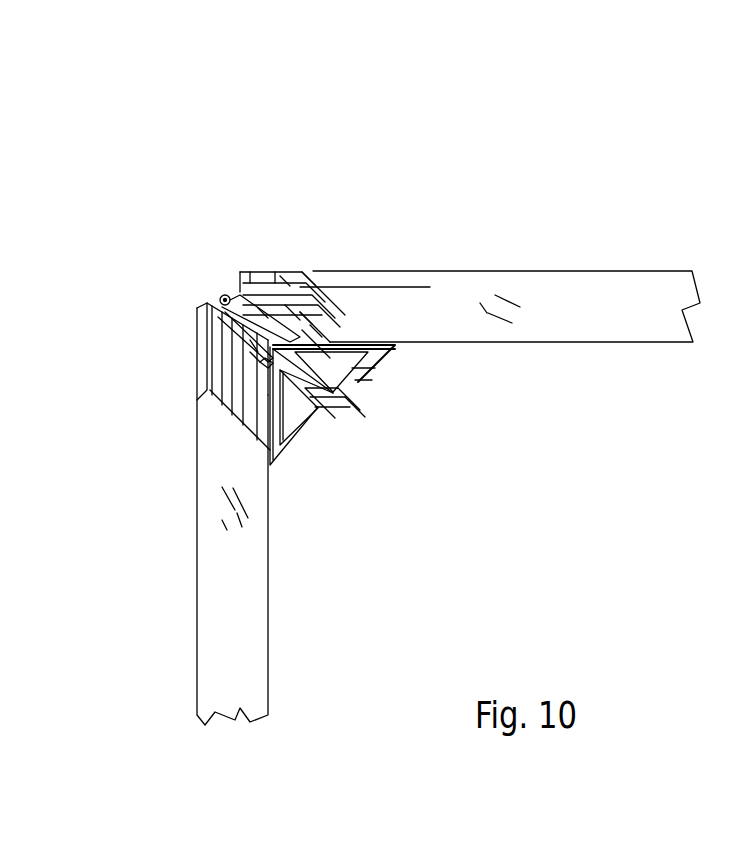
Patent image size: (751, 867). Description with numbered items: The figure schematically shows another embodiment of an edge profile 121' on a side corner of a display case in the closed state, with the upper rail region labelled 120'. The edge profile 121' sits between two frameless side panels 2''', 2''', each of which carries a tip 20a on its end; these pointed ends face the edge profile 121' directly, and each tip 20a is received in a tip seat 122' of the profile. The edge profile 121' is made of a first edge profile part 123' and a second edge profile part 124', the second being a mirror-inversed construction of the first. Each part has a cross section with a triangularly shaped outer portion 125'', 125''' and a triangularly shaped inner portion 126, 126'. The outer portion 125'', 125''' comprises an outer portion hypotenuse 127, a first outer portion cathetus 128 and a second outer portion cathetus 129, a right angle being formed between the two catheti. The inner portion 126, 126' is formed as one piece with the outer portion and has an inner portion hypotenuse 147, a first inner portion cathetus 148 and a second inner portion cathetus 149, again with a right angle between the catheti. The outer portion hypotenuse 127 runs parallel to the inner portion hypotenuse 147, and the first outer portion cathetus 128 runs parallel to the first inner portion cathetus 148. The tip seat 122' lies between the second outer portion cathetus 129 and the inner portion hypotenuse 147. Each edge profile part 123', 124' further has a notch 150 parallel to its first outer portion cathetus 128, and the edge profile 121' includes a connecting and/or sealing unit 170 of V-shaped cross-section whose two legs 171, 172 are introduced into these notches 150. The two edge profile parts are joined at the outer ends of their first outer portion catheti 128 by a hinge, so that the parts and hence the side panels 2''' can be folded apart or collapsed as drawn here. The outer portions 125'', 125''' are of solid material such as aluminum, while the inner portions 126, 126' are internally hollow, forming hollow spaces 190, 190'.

The frameless side panel 2''' is at (415, 460).
The tip 20a is at (298, 304).
The upper rail 120' is at (242, 231).
The edge profile 121' is at (288, 204).
The tip seat 122' is at (410, 244).
The first edge profile part 123' is at (189, 346).
The second edge profile part 124' is at (340, 162).
The triangularly shaped outer portion 125'' is at (137, 351).
The triangularly shaped outer portion 125''' is at (356, 226).
The triangularly shaped inner portion 126 is at (322, 480).
The triangularly shaped inner portion 126' is at (421, 402).
The outer portion hypotenuse 127 is at (259, 272).
The first outer portion cathetus 128 is at (263, 313).
The second outer portion cathetus 129 is at (285, 276).
The inner portion hypotenuse 147 is at (350, 347).
The first inner portion cathetus 148 is at (305, 388).
The second inner portion cathetus 149 is at (347, 383).
The notch 150 is at (240, 290).
The connecting and/or sealing unit 170 is at (255, 356).
The leg 171 is at (255, 347).
The leg 172 is at (320, 332).
The hollow space 190 is at (313, 531).
The hollow space 190' is at (472, 450).